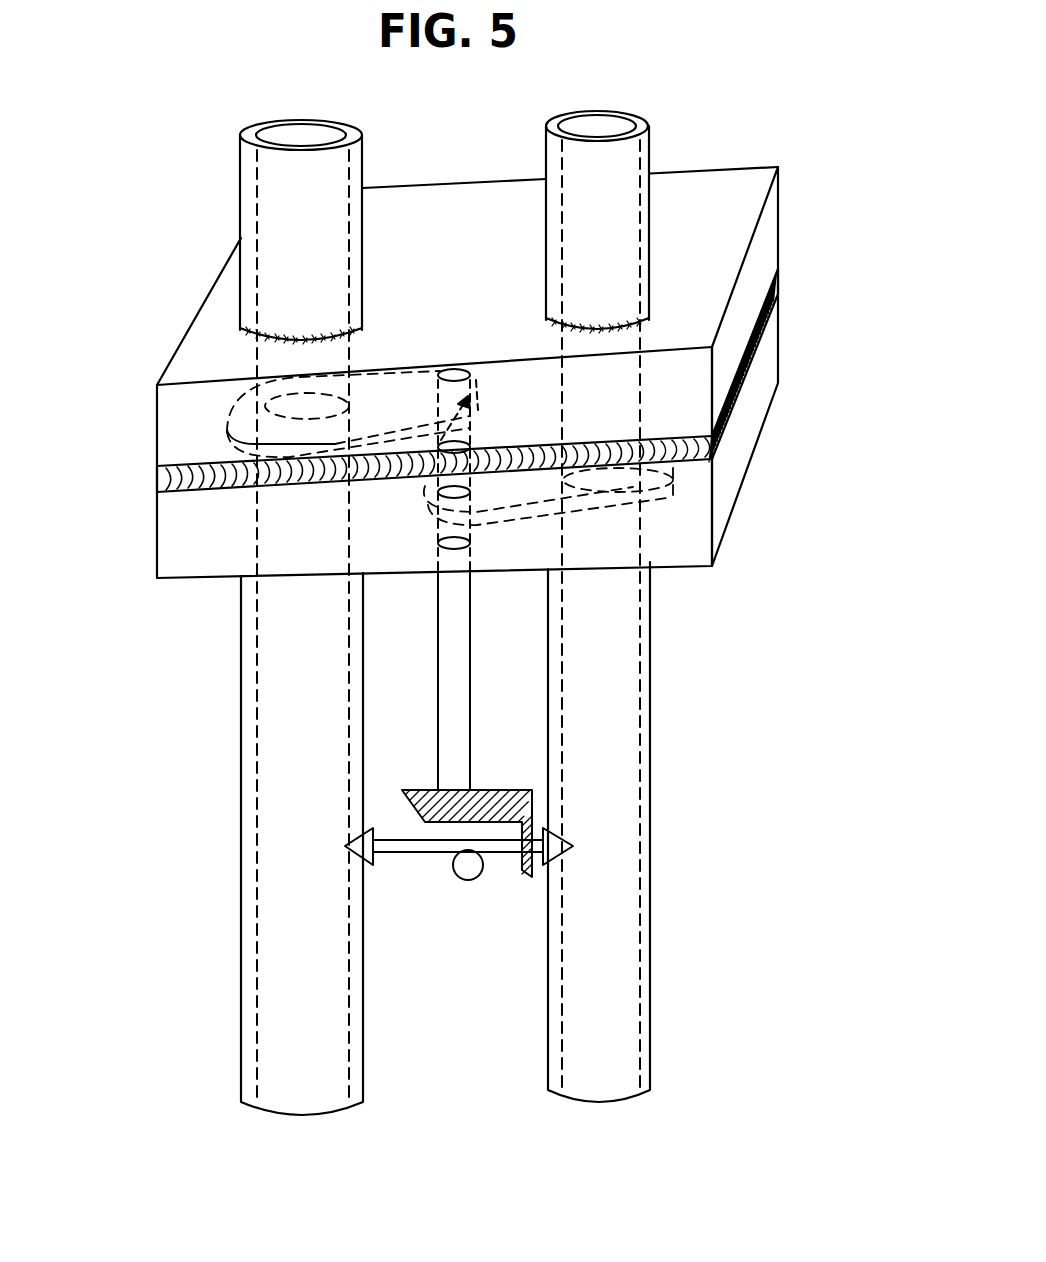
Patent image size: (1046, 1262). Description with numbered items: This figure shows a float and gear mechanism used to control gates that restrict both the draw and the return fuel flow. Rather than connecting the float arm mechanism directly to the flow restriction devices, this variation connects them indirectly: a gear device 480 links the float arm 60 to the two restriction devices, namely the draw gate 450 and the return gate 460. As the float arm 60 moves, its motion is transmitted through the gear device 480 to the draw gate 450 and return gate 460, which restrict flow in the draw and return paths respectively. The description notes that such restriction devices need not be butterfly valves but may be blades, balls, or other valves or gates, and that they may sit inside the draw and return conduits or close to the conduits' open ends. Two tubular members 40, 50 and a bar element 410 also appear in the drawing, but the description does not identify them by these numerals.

The first tubular member 40 is at (240, 212).
The second tubular member 50 is at (650, 152).
The float arm 60 is at (481, 880).
The valve actuator bar 410 is at (400, 856).
The draw gate 450 is at (220, 430).
The return gate 460 is at (670, 512).
The gear device 480 is at (507, 770).